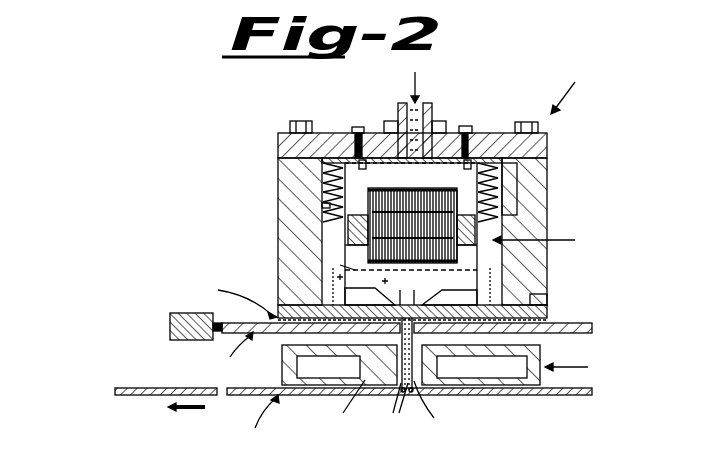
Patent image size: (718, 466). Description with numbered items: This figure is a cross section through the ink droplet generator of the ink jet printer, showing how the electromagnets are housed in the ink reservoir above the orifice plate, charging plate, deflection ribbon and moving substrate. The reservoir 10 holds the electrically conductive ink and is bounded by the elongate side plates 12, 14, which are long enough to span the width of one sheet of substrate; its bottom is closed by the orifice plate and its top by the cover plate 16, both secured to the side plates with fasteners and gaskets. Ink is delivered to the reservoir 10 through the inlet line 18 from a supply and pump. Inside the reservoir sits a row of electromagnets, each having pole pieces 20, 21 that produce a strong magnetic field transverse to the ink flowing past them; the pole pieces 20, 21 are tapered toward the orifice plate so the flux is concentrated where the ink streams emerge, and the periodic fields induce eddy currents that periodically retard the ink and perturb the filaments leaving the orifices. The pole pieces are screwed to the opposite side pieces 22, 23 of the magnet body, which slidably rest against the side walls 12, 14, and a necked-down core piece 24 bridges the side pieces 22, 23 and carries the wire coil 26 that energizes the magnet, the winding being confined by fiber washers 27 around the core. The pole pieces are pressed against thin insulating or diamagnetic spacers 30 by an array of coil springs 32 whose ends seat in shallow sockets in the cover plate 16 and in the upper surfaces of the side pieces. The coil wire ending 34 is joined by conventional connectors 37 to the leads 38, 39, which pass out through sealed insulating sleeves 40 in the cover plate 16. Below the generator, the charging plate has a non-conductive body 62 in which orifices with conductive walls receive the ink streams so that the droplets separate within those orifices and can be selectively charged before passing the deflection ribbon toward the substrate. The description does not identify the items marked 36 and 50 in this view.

The reservoir 10 is at (324, 205).
The side plate 12 is at (280, 189).
The side plate 14 is at (505, 179).
The cover plate 16 is at (548, 143).
The inlet line 18 is at (432, 104).
The pole piece 20 is at (364, 286).
The pole piece 21 is at (456, 286).
The side piece 22 is at (280, 241).
The side piece 23 is at (540, 300).
The core piece 24 is at (410, 277).
The coil 26 is at (387, 192).
The washers 27 is at (462, 258).
The spacer 30 is at (273, 306).
The coil spring 32 is at (283, 161).
The coil wire ending 34 is at (500, 196).
The left coil 36 is at (352, 226).
The connector 37 is at (360, 153).
The lead 38 is at (467, 126).
The lead 39 is at (355, 126).
The insulating sleeve 40 is at (358, 140).
The ribbon slot 50 is at (404, 296).
The non-conductive body 62 is at (560, 327).